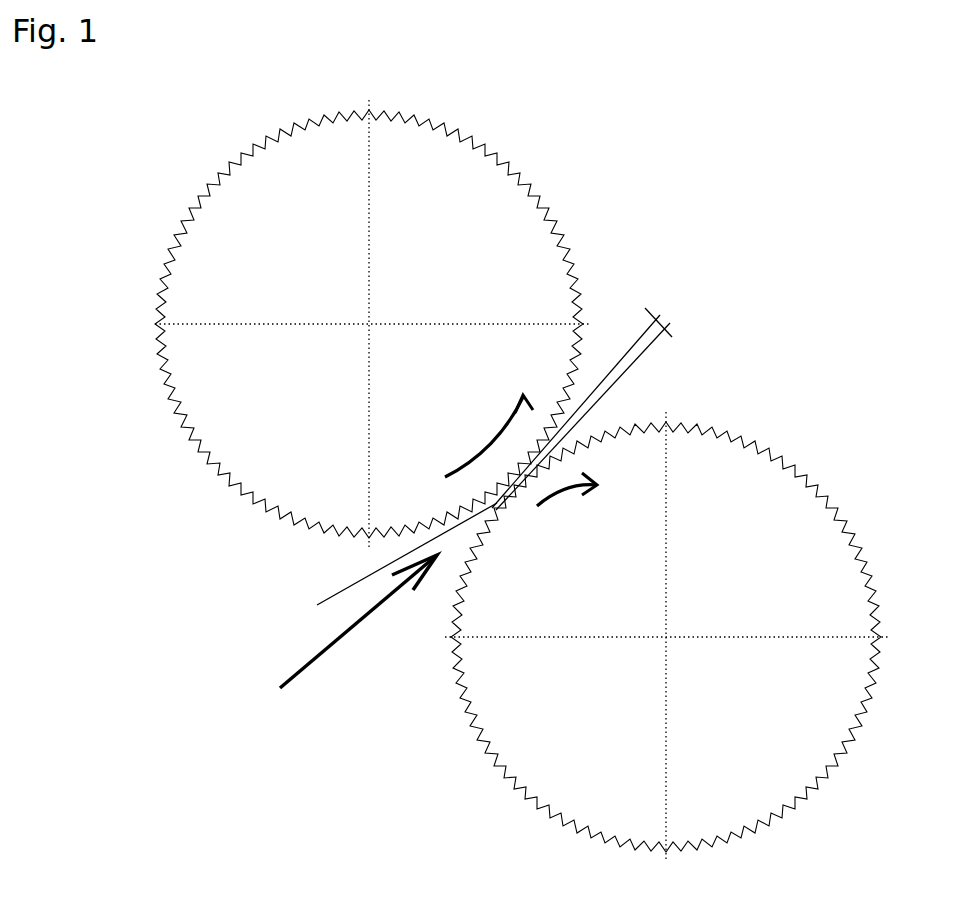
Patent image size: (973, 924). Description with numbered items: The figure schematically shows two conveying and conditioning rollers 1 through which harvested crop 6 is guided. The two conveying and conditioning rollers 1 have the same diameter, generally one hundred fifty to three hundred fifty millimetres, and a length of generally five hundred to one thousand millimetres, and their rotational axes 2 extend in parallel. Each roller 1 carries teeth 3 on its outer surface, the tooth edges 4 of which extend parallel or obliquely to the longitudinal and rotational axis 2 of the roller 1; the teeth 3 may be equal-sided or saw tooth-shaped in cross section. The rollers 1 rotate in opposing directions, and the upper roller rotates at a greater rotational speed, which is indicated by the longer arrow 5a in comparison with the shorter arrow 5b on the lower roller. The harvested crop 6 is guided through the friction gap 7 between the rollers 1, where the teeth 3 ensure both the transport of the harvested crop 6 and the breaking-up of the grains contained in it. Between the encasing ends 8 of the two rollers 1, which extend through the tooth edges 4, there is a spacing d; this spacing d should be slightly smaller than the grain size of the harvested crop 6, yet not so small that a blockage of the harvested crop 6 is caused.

The conveying and conditioning roller 1 is at (504, 481).
The rotational axis 2 is at (369, 324).
The teeth 3 is at (457, 512).
The tooth edges 4 is at (515, 168).
The arrow 5a is at (498, 433).
The arrow 5b is at (567, 503).
The harvested crop 6 is at (288, 683).
The friction gap 7 is at (394, 563).
The encasing end 8 is at (172, 243).
The spacing d is at (594, 399).